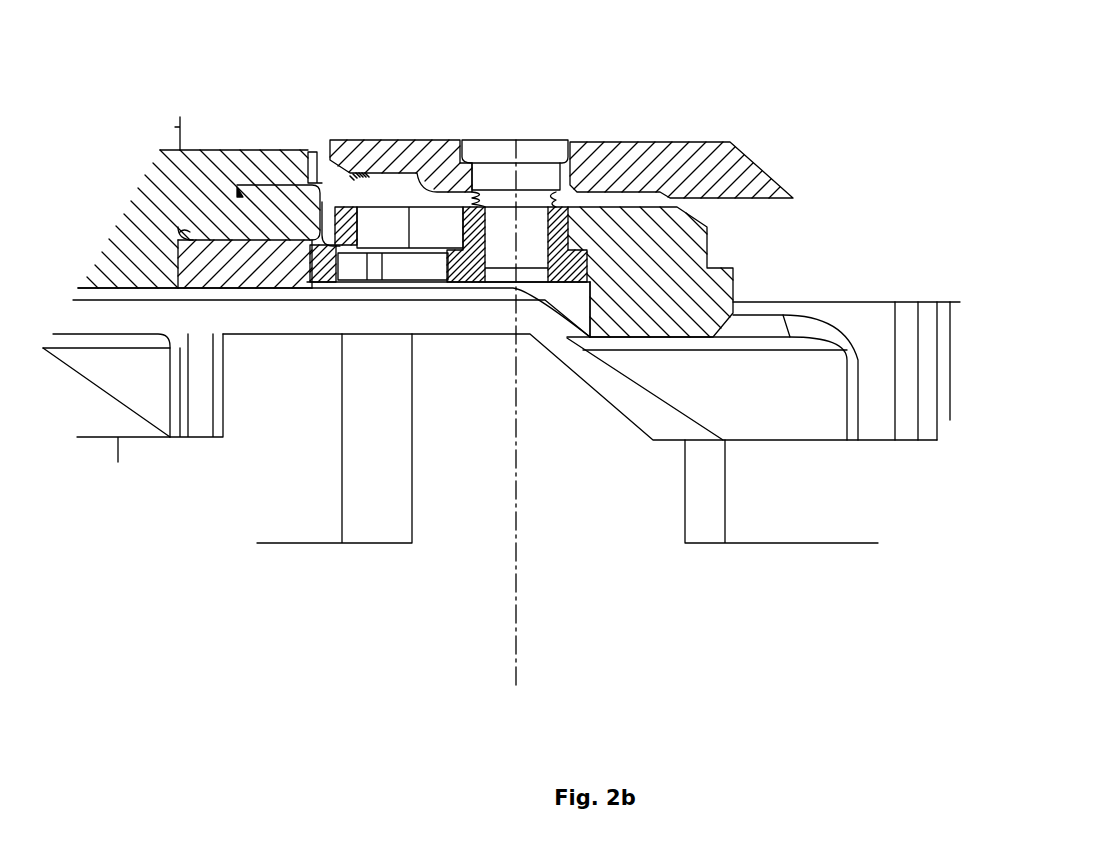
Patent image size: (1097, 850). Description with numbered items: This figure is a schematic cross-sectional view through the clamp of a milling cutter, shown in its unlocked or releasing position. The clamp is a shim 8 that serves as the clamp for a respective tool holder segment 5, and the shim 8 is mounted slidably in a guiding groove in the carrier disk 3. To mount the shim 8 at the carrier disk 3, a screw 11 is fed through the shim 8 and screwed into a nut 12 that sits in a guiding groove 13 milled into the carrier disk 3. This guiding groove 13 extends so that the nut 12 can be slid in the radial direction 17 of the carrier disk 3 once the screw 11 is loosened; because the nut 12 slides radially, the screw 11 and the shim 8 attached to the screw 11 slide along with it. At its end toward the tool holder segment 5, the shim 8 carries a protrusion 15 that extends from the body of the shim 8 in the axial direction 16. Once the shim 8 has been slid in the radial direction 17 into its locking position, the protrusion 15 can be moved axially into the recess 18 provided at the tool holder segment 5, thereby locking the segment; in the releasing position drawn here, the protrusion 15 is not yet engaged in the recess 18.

The carrier disk 3 is at (127, 378).
The tool holder segment 5 is at (272, 203).
The shim 8 is at (693, 158).
The screw 11 is at (542, 150).
The nut 12 is at (560, 272).
The guiding groove 13 is at (427, 280).
The protrusion 15 is at (350, 176).
The axial direction 16 is at (808, 332).
The radial direction 17 is at (333, 117).
The recess 18 is at (237, 190).